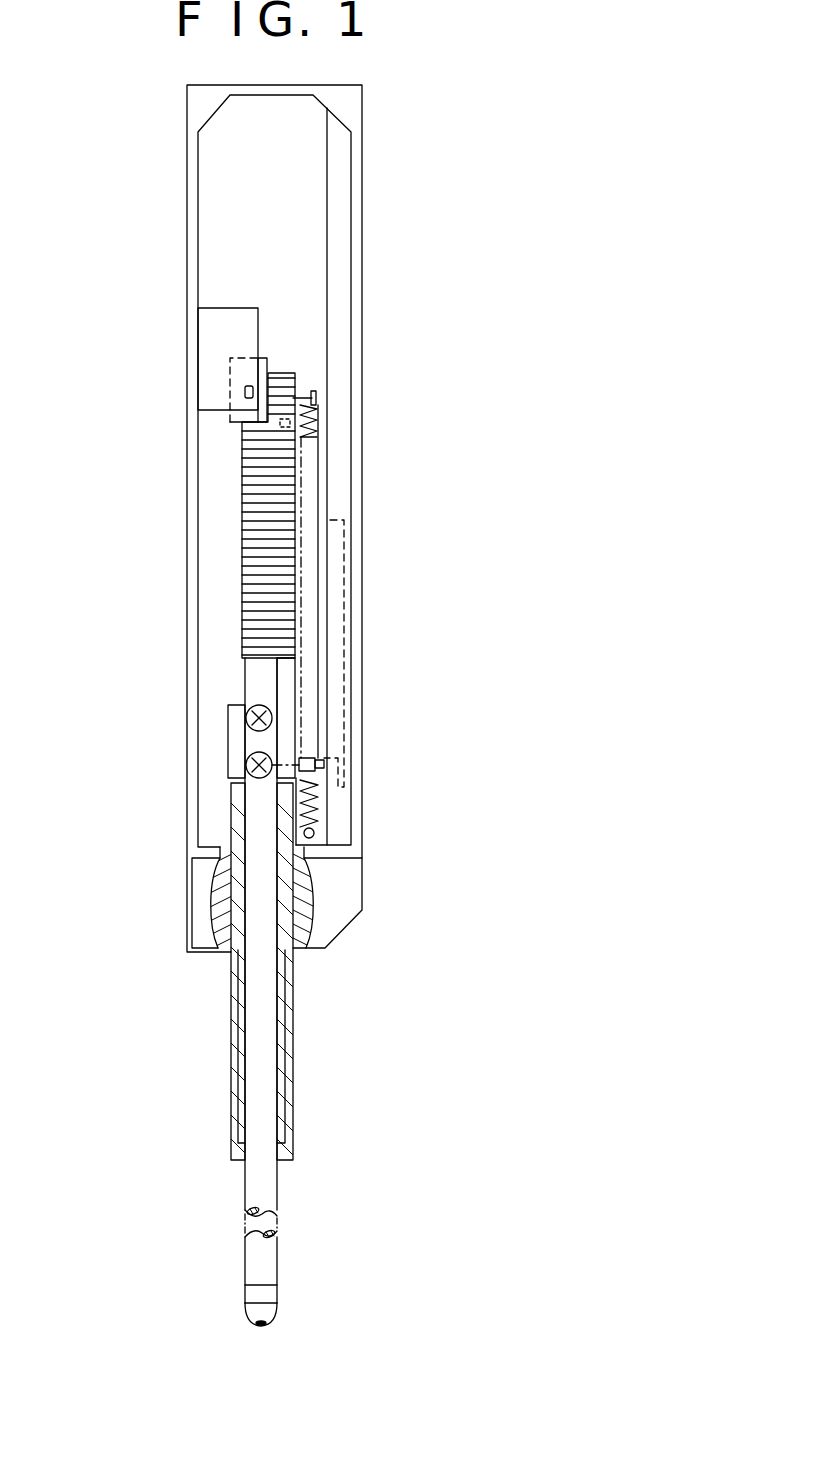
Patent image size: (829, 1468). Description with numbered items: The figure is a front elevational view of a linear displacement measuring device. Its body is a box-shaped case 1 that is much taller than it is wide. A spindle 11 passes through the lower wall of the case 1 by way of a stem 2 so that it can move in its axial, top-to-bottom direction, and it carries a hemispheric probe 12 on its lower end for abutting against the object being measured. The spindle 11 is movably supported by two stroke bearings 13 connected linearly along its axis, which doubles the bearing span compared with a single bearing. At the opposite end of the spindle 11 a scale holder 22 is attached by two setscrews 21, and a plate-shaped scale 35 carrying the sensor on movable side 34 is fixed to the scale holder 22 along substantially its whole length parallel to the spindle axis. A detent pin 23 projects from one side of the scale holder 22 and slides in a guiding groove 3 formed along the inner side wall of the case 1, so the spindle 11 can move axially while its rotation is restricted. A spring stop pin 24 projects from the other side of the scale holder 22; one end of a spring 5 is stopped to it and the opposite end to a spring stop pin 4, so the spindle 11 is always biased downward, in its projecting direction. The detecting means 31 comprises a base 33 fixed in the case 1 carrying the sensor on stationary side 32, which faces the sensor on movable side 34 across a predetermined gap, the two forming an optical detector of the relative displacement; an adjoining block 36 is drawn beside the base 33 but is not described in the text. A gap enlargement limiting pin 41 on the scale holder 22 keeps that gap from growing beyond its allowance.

The case 1 is at (187, 212).
The stem 2 is at (232, 1077).
The guiding groove 3 is at (344, 576).
The spring stop pin 4 is at (315, 836).
The spring 5 is at (318, 489).
The spindle 11 is at (253, 1185).
The probe 12 is at (266, 1326).
The stroke bearing 13 is at (283, 1012).
The setscrews 21 is at (246, 765).
The scale holder 22 is at (288, 692).
The detent pin 23 is at (344, 782).
The spring stop pin 24 is at (315, 398).
The detecting means 31 is at (174, 483).
The sensor on stationary side 32 is at (245, 392).
The base 33 is at (230, 413).
The sensor on movable side 34 is at (245, 541).
The scale 35 is at (245, 615).
The mounting block 36 is at (203, 327).
The gap enlargement limiting pin 41 is at (297, 378).